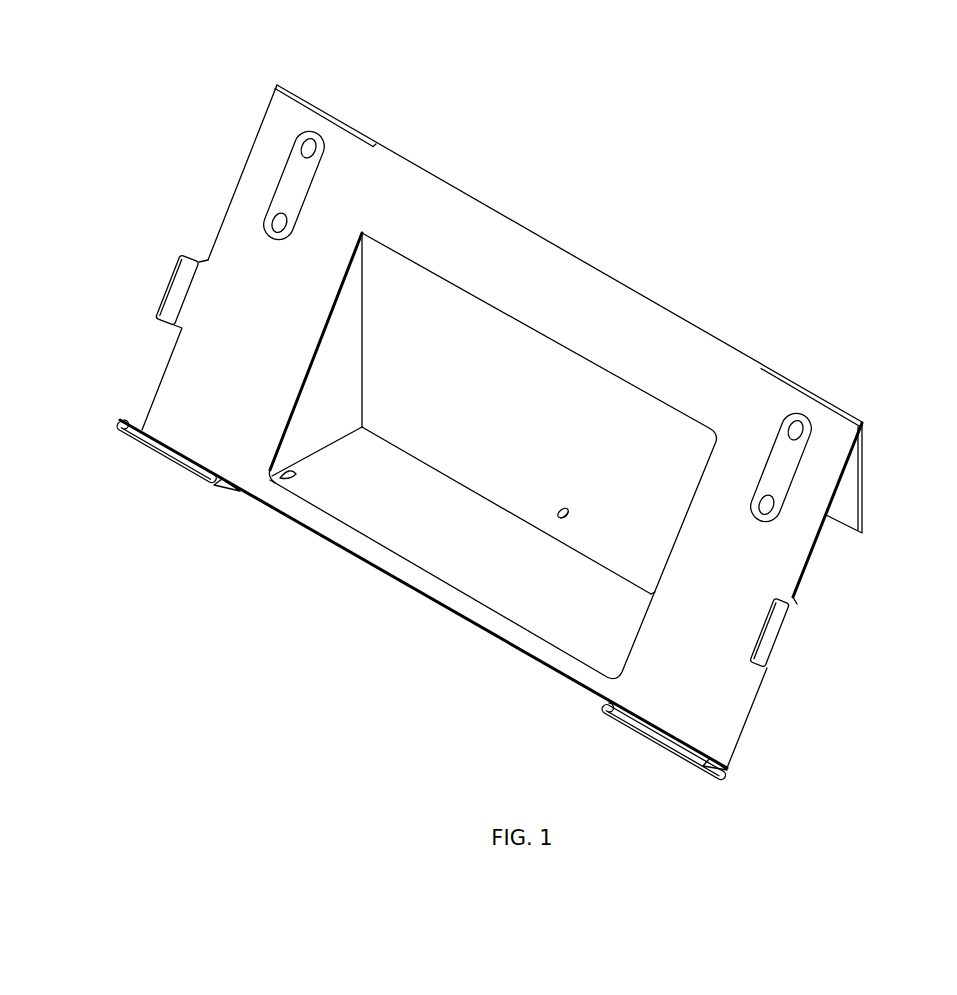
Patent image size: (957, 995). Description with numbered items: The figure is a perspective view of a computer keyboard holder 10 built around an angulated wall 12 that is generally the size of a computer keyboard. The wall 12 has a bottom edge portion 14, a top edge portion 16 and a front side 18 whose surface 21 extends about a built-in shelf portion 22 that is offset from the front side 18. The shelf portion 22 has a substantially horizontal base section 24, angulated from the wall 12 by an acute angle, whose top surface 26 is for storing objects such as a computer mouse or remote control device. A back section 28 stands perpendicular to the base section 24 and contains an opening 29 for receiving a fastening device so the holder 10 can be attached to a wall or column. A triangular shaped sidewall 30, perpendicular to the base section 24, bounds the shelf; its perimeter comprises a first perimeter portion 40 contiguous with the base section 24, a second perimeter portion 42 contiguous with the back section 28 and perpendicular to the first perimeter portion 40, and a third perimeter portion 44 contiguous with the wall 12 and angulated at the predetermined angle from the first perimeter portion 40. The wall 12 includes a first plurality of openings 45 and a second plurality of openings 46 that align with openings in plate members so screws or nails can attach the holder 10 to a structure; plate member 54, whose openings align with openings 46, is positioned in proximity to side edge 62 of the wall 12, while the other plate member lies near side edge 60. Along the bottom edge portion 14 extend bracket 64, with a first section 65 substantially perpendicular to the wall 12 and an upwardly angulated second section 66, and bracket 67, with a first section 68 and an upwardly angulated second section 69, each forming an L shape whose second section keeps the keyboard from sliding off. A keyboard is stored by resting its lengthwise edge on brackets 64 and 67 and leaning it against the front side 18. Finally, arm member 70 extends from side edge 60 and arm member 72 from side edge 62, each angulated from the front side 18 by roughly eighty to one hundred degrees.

The computer keyboard holder 10 is at (681, 168).
The wall 12 is at (655, 328).
The bottom edge portion 14 is at (305, 522).
The top edge portion 16 is at (422, 170).
The front side 18 is at (173, 380).
The surface 21 is at (347, 540).
The built-in shelf portion 22 is at (555, 630).
The base section 24 is at (422, 543).
The top surface 26 is at (490, 582).
The back section 28 is at (523, 358).
The opening 29 is at (563, 508).
The triangular shaped sidewall 30 is at (335, 390).
The first perimeter portion 40 is at (318, 453).
The second perimeter portion 42 is at (362, 318).
The third perimeter portion 44 is at (334, 302).
The first plurality of openings 45 is at (275, 220).
The second plurality of openings 46 is at (760, 500).
The plate member 54 is at (862, 470).
The side edge 60 is at (227, 213).
The side edge 62 is at (807, 560).
The bracket 64 is at (165, 457).
The first section 65 is at (226, 489).
The second section 66 is at (122, 434).
The bracket 67 is at (607, 716).
The first section 68 is at (712, 771).
The second section 69 is at (668, 749).
The arm member 70 is at (165, 290).
The arm member 72 is at (786, 625).